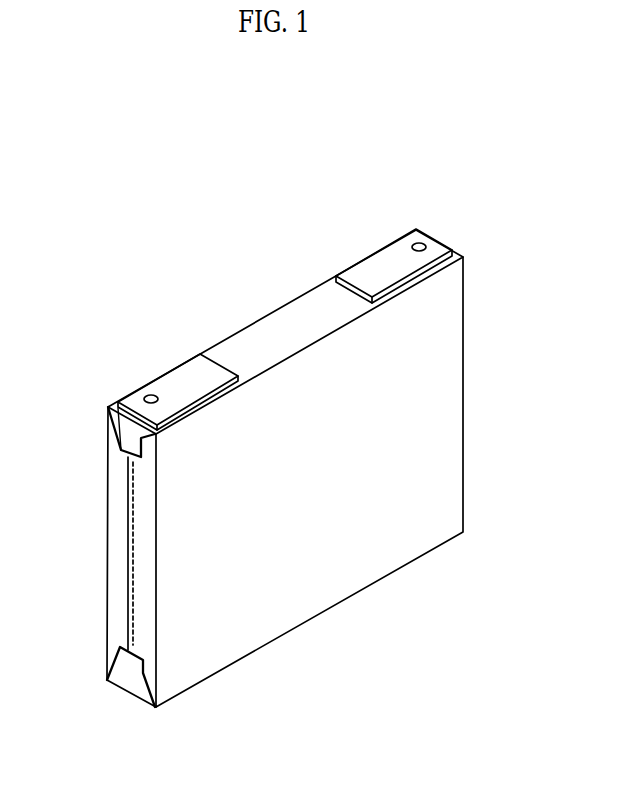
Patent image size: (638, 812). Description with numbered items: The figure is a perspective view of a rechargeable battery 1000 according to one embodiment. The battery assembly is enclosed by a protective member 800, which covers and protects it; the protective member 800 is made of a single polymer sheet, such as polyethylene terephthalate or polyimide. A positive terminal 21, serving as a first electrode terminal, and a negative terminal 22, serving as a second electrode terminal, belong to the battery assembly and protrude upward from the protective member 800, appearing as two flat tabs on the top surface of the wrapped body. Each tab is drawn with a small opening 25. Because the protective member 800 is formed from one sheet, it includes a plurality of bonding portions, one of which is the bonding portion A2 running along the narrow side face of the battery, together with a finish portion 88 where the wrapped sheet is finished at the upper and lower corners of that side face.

The rechargeable battery 1000 is at (270, 199).
The protective member 800 is at (327, 607).
The positive terminal 21 is at (365, 278).
The negative terminal 22 is at (195, 375).
The tab hole 25 is at (150, 395).
The finish portion 88 is at (124, 459).
The bonding portion A2 is at (127, 547).